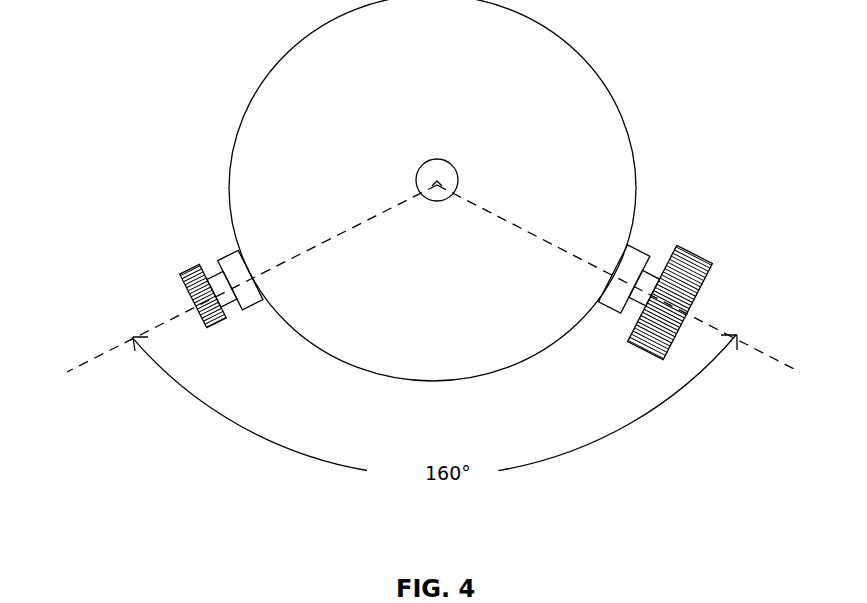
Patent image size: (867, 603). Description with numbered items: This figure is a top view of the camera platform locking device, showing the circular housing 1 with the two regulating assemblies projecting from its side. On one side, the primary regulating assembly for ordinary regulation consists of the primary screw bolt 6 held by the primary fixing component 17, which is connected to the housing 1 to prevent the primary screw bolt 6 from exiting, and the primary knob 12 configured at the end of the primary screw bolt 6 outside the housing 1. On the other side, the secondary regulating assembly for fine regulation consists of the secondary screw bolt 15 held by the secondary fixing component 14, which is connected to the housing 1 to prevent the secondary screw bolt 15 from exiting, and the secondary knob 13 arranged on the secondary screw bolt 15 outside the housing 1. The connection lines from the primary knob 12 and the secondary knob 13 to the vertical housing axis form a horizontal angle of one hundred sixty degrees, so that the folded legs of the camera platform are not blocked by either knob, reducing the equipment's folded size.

The housing 1 is at (243, 115).
The primary screw bolt 6 is at (642, 297).
The primary knob 12 is at (707, 262).
The secondary knob 13 is at (187, 273).
The secondary fixing component 14 is at (233, 253).
The secondary screw bolt 15 is at (220, 288).
The primary fixing component 17 is at (643, 252).